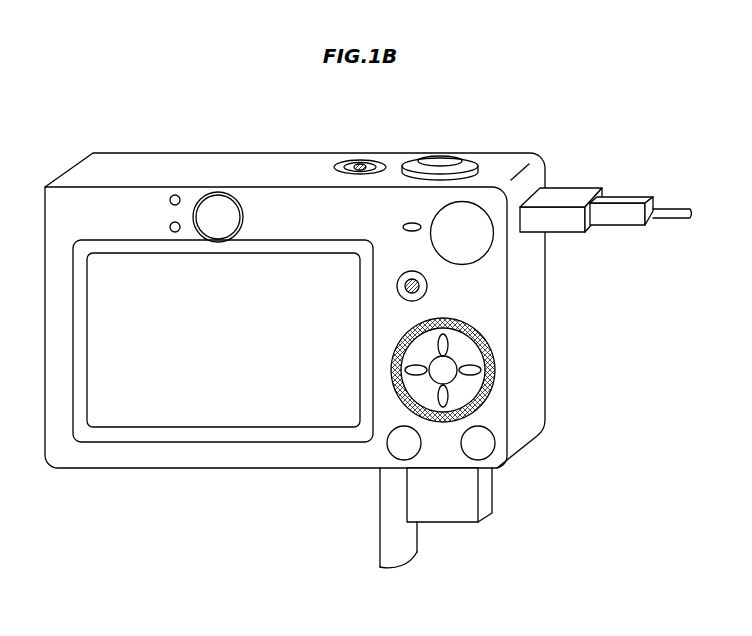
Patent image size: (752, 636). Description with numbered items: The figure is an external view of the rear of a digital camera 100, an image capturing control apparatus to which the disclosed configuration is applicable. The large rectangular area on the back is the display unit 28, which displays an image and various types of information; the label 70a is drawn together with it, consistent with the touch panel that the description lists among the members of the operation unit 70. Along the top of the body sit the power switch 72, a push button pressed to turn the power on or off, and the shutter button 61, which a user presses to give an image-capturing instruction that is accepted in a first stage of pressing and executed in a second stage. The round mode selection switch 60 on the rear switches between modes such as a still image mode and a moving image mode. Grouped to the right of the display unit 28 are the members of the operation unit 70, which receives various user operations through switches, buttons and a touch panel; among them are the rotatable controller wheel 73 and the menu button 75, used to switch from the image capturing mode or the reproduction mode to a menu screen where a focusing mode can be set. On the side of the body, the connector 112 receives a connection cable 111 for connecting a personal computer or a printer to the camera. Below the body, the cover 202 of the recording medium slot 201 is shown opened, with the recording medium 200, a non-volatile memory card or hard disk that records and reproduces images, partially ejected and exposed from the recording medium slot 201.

The digital camera 100 is at (110, 507).
The display unit 28 is at (223, 272).
The touch panel 70a is at (145, 283).
The controller wheel 73 is at (407, 328).
The power switch 72 is at (363, 160).
The shutter button 61 is at (442, 156).
The mode selection switch 60 is at (475, 222).
The operation unit 70 is at (383, 187).
The menu button 75 is at (400, 446).
The connector 112 is at (571, 186).
The connection cable 111 is at (630, 197).
The recording medium 200 is at (467, 500).
The recording medium slot 201 is at (425, 470).
The cover 202 is at (420, 553).